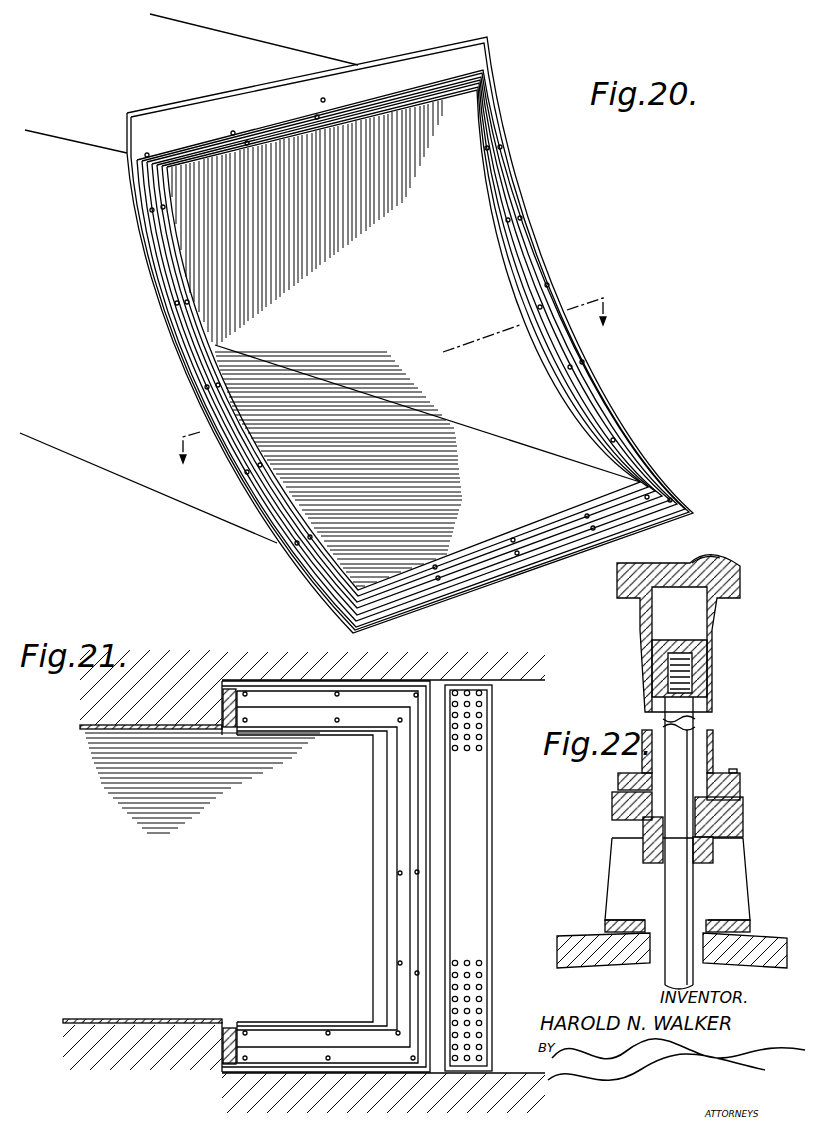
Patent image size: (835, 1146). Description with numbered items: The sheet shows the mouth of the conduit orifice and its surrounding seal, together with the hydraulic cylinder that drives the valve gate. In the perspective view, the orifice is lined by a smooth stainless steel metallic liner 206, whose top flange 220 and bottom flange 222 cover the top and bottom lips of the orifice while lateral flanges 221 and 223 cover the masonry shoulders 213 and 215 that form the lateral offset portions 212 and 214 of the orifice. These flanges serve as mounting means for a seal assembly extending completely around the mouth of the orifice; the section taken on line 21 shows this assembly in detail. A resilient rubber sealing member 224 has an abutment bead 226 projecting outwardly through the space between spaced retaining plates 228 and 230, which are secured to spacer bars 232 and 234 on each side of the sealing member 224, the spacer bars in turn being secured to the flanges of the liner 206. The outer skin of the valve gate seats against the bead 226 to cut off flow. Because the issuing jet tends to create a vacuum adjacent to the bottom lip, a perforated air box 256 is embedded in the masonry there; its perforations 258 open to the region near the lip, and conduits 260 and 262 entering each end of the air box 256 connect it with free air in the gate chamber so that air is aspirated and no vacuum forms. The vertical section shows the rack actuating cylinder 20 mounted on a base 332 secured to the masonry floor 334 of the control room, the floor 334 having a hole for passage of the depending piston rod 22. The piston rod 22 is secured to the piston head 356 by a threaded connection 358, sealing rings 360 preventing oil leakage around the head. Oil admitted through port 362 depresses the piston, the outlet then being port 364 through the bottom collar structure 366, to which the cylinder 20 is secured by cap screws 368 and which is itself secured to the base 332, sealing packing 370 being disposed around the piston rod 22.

In FIG. 22, the hydraulic cylinder 20 is at (643, 629).
In FIG. 20, the section line 21— 21 is at (401, 396).
In FIG. 22, the piston rod 22 is at (685, 913).
In FIG. 20, the metallic liner 206 is at (70, 455).
In FIG. 21, the metallic liner 206 is at (103, 730).
In FIG. 21, the lateral offset portion 212 is at (433, 683).
In FIG. 21, the masonry shoulder 213 is at (212, 690).
In FIG. 21, the lateral offset portion 214 is at (435, 1074).
In FIG. 21, the masonry shoulder 215 is at (213, 1027).
In FIG. 20, the top flange 220 is at (236, 100).
In FIG. 20, the lateral flange 221 is at (533, 231).
In FIG. 21, the lateral flange 221 is at (213, 705).
In FIG. 20, the bottom flange 222 is at (495, 577).
In FIG. 21, the bottom flange 222 is at (423, 967).
In FIG. 20, the lateral flange 223 is at (158, 296).
In FIG. 21, the lateral flange 223 is at (216, 1063).
In FIG. 21, the resilient sealing member 224 is at (190, 707).
In FIG. 20, the abutment bead 226 is at (160, 231).
In FIG. 21, the abutment bead 226 is at (288, 707).
In FIG. 20, the retaining plate 228 is at (162, 263).
In FIG. 21, the retaining plate 228 is at (245, 684).
In FIG. 20, the retaining plate 230 is at (213, 338).
In FIG. 21, the retaining plate 230 is at (288, 720).
In FIG. 21, the spacer bar 232 is at (229, 688).
In FIG. 21, the spacer bar 234 is at (225, 730).
In FIG. 21, the perforated air box 256 is at (493, 907).
In FIG. 21, the perforations 258 is at (478, 705).
In FIG. 21, the conduit 260 is at (477, 1083).
In FIG. 21, the conduit 262 is at (480, 667).
In FIG. 22, the base 332 is at (738, 922).
In FIG. 22, the masonry floor 334 is at (632, 950).
In FIG. 22, the piston head 356 is at (713, 648).
In FIG. 22, the threaded connection 358 is at (683, 687).
In FIG. 22, the sealing rings 360 is at (648, 668).
In FIG. 22, the port 362 is at (725, 556).
In FIG. 22, the port 364 is at (722, 805).
In FIG. 22, the bottom collar structure 366 is at (617, 802).
In FIG. 22, the cap screws 368 is at (732, 770).
In FIG. 22, the sealing packing 370 is at (650, 843).